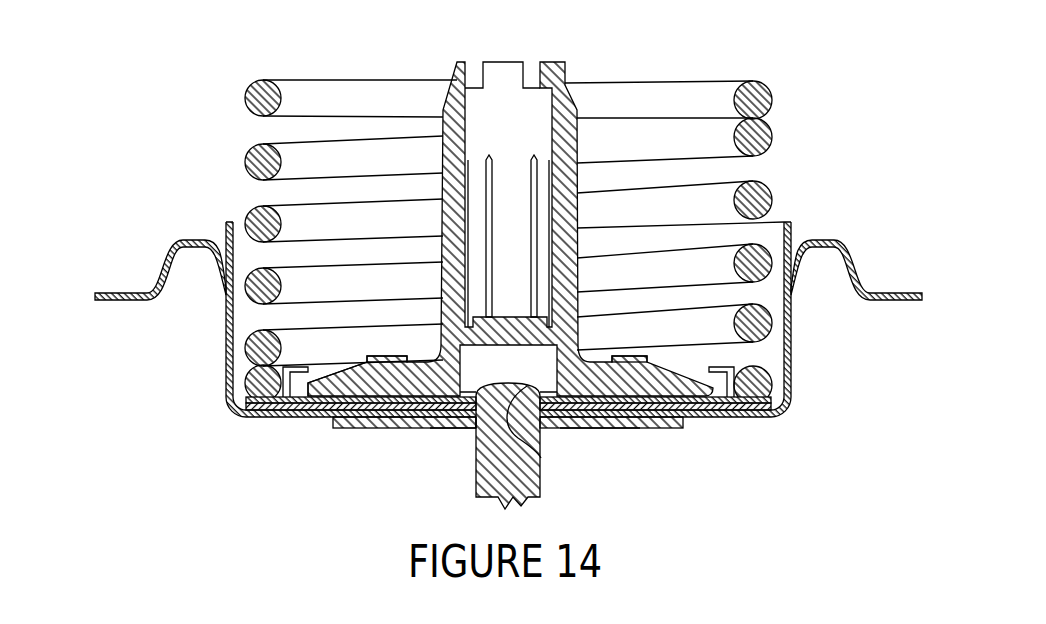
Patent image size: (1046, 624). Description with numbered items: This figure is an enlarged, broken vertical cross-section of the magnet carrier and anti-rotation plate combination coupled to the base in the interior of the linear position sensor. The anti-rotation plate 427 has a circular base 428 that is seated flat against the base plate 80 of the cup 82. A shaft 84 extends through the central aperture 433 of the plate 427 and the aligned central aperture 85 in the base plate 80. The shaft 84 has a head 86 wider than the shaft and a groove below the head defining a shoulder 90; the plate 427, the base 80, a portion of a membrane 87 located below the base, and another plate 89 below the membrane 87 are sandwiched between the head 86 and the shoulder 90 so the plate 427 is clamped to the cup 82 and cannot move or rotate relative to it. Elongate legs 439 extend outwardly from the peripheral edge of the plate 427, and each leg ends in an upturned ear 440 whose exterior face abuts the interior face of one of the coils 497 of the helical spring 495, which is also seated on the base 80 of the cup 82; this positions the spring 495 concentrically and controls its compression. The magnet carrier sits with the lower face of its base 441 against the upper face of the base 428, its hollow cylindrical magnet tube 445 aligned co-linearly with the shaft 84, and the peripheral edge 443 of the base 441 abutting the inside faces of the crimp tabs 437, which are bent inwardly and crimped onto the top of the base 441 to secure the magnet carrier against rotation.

The base plate 80 is at (715, 413).
The cup 82 is at (782, 218).
The shaft 84 is at (578, 430).
The central aperture 85 is at (543, 433).
The head 86 is at (438, 427).
The membrane 87 is at (265, 397).
The plate 89 is at (663, 428).
The shoulder 90 is at (468, 425).
The anti-rotation plate 427 is at (387, 0).
The circular base 428 is at (338, 425).
The central aperture 433 is at (552, 460).
The crimp tabs 437 is at (452, 0).
The legs 439 is at (292, 415).
The ear 440 is at (677, 0).
The base 441 is at (396, 380).
The peripheral edge 443 is at (514, 0).
The magnet tube 445 is at (577, 158).
The helical spring 495 is at (737, 80).
The coils 497 is at (240, 403).